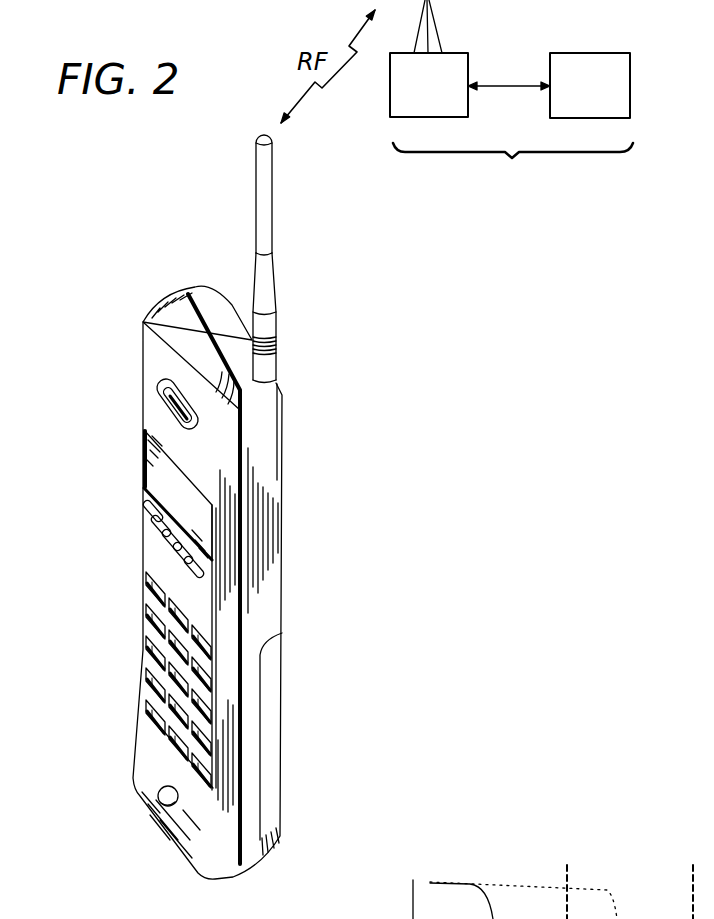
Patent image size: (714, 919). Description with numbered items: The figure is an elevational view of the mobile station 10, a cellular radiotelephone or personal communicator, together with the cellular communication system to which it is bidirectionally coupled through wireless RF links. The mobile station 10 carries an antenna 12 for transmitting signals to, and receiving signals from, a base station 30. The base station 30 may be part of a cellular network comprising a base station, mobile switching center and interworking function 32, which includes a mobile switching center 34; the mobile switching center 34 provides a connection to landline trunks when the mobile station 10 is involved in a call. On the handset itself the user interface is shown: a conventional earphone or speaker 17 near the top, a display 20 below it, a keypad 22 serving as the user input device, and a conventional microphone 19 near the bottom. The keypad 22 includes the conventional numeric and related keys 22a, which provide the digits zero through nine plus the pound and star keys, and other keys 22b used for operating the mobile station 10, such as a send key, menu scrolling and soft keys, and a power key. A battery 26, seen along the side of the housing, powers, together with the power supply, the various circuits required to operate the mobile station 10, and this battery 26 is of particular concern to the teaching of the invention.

The mobile station 10 is at (90, 317).
The antenna 12 is at (262, 216).
The speaker 17 is at (176, 397).
The microphone 19 is at (158, 800).
The display 20 is at (158, 481).
The keypad 22 is at (208, 688).
The numeric and related keys 22a is at (152, 664).
The other keys 22b is at (158, 550).
The battery 26 is at (268, 764).
The base station 30 is at (422, 117).
The Base Station/Mobile Switching Center/Interworking function (BMI) 32 is at (513, 178).
The mobile switching center (MSC) 34 is at (587, 53).